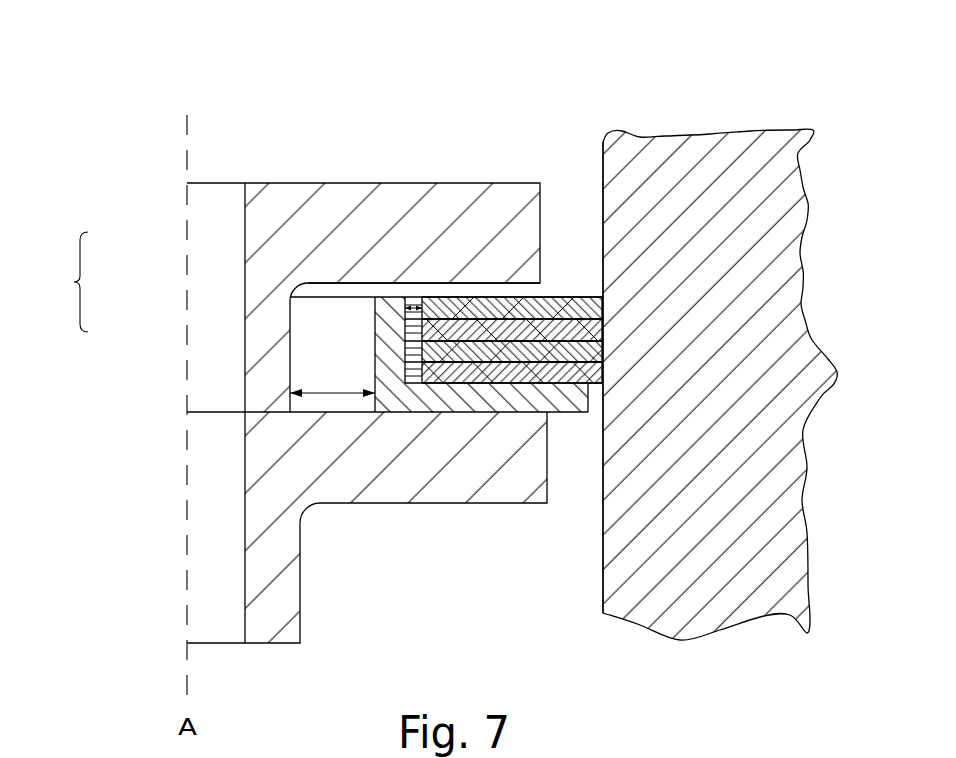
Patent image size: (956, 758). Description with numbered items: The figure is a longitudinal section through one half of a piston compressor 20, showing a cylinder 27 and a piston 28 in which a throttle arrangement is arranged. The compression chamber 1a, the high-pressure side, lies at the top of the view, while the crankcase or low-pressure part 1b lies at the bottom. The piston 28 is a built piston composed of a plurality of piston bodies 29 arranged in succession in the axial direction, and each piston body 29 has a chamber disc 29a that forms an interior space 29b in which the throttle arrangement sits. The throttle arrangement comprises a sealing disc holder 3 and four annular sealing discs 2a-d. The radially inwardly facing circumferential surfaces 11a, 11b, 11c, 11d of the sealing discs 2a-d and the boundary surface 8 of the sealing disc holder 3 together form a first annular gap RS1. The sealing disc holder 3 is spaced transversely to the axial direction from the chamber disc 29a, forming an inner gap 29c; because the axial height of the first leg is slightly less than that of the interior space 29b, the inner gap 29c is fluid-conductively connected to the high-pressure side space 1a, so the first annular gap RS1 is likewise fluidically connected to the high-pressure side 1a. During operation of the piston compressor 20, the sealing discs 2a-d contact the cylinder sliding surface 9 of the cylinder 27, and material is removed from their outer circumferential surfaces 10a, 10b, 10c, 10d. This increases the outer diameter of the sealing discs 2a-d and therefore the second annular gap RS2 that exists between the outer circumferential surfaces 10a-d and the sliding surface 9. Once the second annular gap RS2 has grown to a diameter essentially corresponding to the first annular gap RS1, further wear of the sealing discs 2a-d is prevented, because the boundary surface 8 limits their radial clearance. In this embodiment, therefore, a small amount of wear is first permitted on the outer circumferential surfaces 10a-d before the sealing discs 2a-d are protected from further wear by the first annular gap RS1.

The piston 28 is at (265, 176).
The piston body 29 is at (258, 231).
The chamber disc 29a is at (258, 254).
The interior space 29b is at (348, 284).
The inner gap 29c is at (330, 396).
The sealing disc holder 3 is at (403, 284).
The first annular gap RS1 is at (413, 297).
The second annular gap RS2 is at (602, 296).
The boundary surface 8 is at (415, 383).
The outer circumferential surface 10a is at (603, 313).
The outer circumferential surface 10b is at (603, 332).
The outer circumferential surface 10c is at (603, 351).
The outer circumferential surface 10d is at (603, 372).
The radially inwardly facing circumferential surface 11a is at (405, 310).
The radially inwardly facing circumferential surface 11b is at (405, 332).
The radially inwardly facing circumferential surface 11c is at (405, 353).
The radially inwardly facing circumferential surface 11d is at (405, 373).
The annular sealing discs 2a-d is at (53, 282).
The cylinder 27 is at (712, 133).
The cylinder sliding surface 9 is at (601, 172).
The piston compressor 20 is at (413, 106).
The compression chamber 1a is at (603, 66).
The low-pressure part 1b is at (603, 664).